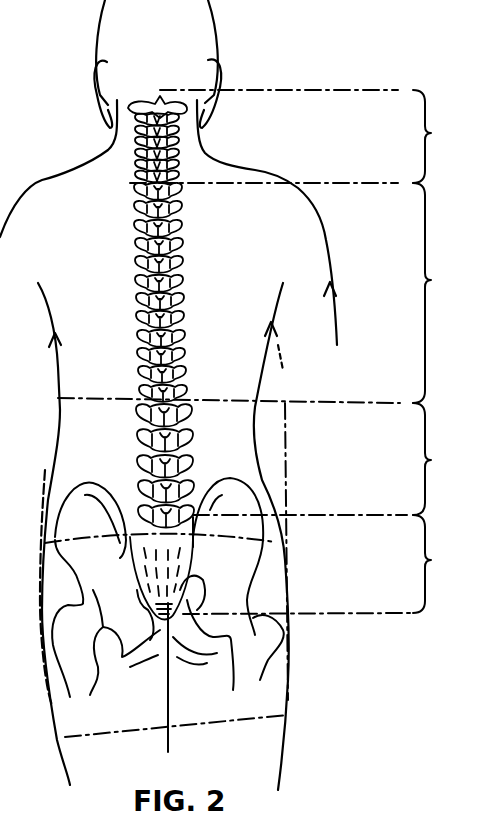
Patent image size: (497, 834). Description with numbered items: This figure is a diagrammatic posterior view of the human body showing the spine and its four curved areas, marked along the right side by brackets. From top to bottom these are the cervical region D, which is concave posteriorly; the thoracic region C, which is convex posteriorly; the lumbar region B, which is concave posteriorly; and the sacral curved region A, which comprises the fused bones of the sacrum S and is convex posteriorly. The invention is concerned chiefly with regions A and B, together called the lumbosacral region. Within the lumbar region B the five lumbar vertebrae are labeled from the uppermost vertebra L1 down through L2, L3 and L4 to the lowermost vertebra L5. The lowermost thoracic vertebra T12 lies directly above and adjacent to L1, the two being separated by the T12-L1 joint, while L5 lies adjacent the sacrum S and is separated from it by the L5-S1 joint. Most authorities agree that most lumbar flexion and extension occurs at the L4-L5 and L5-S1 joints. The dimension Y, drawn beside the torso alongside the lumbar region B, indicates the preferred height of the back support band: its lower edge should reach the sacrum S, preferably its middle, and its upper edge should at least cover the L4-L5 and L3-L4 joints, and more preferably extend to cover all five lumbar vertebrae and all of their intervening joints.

The lowermost vertebra of the thoracic region T12 is at (165, 400).
The uppermost vertebra of the lumbar region L1 is at (180, 412).
The second lumbar vertebra L2 is at (176, 440).
The third lumbar vertebra L3 is at (148, 454).
The fourth lumbar vertebra L4 is at (144, 479).
The lowermost vertebra of the lumbar region L5 is at (141, 508).
The sacrum S is at (128, 550).
The dimension Y is at (287, 450).
The sacral curved region A is at (432, 564).
The lumbar region B is at (431, 459).
The thoracic region C is at (431, 293).
The cervical region D is at (433, 136).